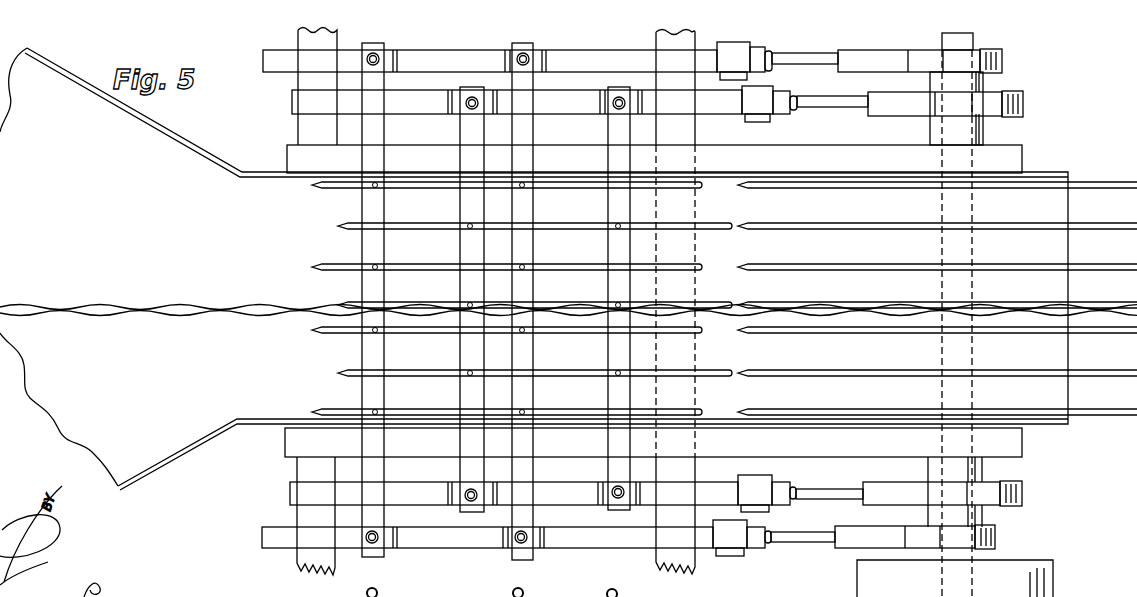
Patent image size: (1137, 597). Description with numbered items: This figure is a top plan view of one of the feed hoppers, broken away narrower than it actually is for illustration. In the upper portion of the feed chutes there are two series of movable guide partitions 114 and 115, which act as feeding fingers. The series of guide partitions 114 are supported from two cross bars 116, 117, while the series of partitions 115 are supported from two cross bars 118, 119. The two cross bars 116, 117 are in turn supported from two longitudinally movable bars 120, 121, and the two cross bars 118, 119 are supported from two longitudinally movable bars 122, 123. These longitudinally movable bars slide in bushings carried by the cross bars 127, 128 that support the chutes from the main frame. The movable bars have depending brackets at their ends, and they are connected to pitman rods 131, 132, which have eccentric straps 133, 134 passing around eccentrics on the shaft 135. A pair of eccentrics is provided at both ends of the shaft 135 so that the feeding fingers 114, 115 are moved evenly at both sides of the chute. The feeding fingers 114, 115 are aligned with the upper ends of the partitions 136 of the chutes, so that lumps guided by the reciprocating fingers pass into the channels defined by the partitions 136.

The movable guide partitions 114 is at (319, 411).
The movable guide partitions 115 is at (350, 378).
The cross bar 116 is at (365, 341).
The cross bar 117 is at (535, 358).
The cross bar 118 is at (460, 245).
The cross bar 119 is at (607, 243).
The longitudinally movable bar 120 is at (433, 550).
The longitudinally movable bar 121 is at (421, 592).
The longitudinally movable bar 122 is at (567, 495).
The longitudinally movable bar 123 is at (575, 95).
The cross bar 127 is at (447, 48).
The cross bar 128 is at (690, 563).
The pitman rod 131 is at (818, 491).
The pitman rod 132 is at (846, 107).
The eccentric strap 133 is at (870, 52).
The eccentric strap 134 is at (1023, 100).
The shaft 135 is at (975, 37).
The partitions 136 is at (903, 229).